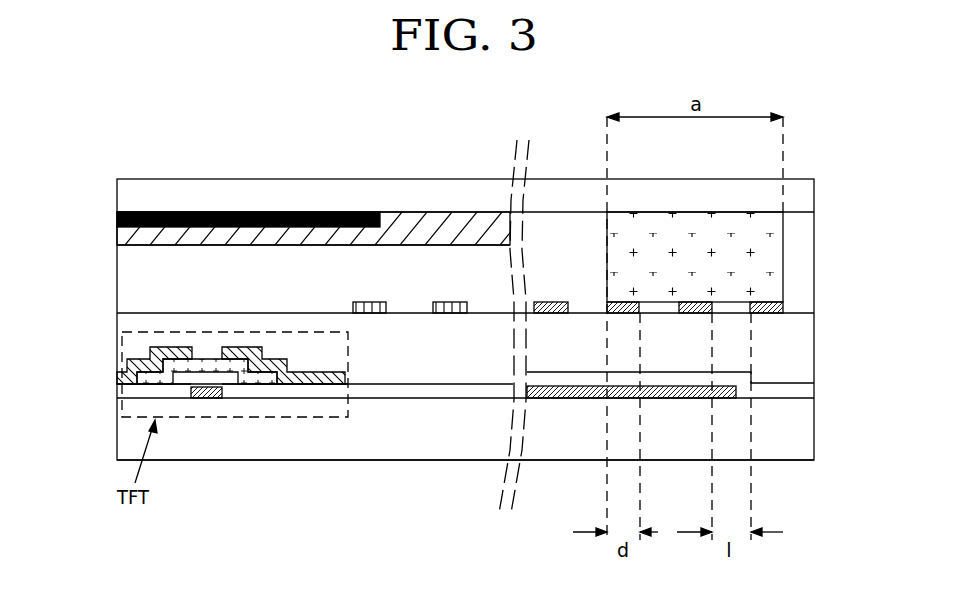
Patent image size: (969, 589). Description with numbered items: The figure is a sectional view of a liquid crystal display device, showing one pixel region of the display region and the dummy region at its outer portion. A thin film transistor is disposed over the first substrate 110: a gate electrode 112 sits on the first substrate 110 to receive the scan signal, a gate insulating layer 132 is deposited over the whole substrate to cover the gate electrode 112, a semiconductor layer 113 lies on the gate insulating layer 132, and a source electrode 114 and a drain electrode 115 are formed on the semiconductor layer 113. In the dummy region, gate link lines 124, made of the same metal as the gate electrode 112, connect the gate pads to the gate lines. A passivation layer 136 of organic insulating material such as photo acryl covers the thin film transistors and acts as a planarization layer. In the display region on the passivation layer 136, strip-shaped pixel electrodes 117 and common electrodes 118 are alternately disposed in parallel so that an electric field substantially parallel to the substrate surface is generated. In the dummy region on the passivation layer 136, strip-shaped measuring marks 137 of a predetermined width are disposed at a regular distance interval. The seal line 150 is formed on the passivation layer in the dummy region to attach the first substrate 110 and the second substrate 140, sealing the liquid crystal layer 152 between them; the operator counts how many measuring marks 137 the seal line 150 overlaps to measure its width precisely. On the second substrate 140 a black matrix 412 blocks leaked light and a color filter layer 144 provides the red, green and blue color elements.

The first substrate 110 is at (806, 430).
The gate electrode 112 is at (208, 399).
The semiconductor layer 113 is at (168, 384).
The source electrode 114 is at (125, 373).
The drain electrode 115 is at (273, 360).
The pixel electrode 117 is at (368, 313).
The common electrode 118 is at (447, 313).
The gate link line 124 is at (677, 398).
The gate insulating layer 132 is at (132, 390).
The passivation layer 136 is at (805, 352).
The measuring mark 137 is at (548, 313).
The second substrate 140 is at (806, 199).
The color filter layer 144 is at (405, 226).
The seal line 150 is at (784, 259).
The liquid crystal layer 152 is at (133, 283).
The black matrix 412 is at (249, 212).